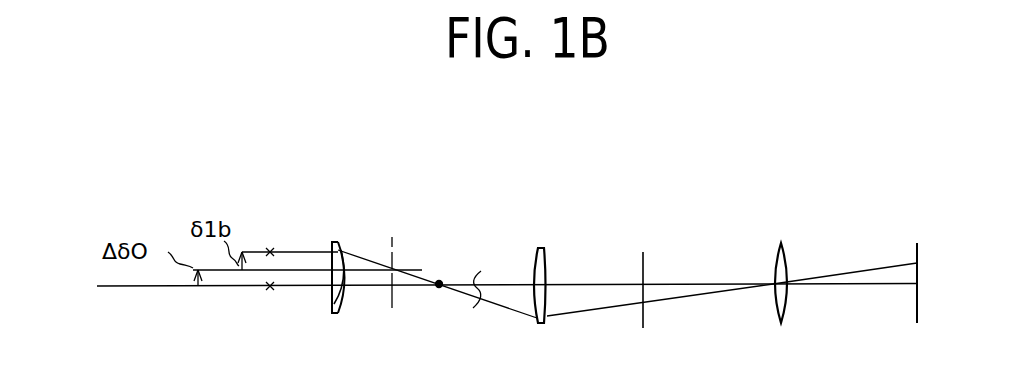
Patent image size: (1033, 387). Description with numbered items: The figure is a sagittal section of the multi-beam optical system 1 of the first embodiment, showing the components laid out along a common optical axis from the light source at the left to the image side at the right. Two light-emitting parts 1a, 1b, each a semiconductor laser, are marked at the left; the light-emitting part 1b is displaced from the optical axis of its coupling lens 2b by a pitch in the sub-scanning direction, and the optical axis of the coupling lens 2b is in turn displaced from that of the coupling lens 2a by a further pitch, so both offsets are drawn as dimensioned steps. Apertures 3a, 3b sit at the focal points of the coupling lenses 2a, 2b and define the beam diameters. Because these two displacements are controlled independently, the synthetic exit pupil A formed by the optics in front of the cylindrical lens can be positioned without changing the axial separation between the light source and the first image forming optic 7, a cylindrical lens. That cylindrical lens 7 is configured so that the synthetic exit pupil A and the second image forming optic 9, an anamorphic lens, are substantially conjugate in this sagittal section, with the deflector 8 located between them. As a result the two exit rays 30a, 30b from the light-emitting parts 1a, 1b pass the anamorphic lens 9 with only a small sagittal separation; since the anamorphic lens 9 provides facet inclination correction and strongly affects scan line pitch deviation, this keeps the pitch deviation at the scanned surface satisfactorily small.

The multi-beam optical system 1 is at (315, 120).
The light-emitting part 1a is at (275, 302).
The light-emitting part 1b is at (276, 241).
The coupling lens 2a is at (336, 314).
The coupling lens 2b is at (339, 243).
The aperture 3a is at (397, 225).
The aperture 3b is at (399, 258).
The first image forming optic 7 is at (542, 269).
The deflector 8 is at (644, 272).
The second image forming optic 9 is at (782, 268).
The exit ray 30a is at (856, 288).
The exit ray 30b is at (860, 270).
The synthetic exit pupil A is at (444, 269).